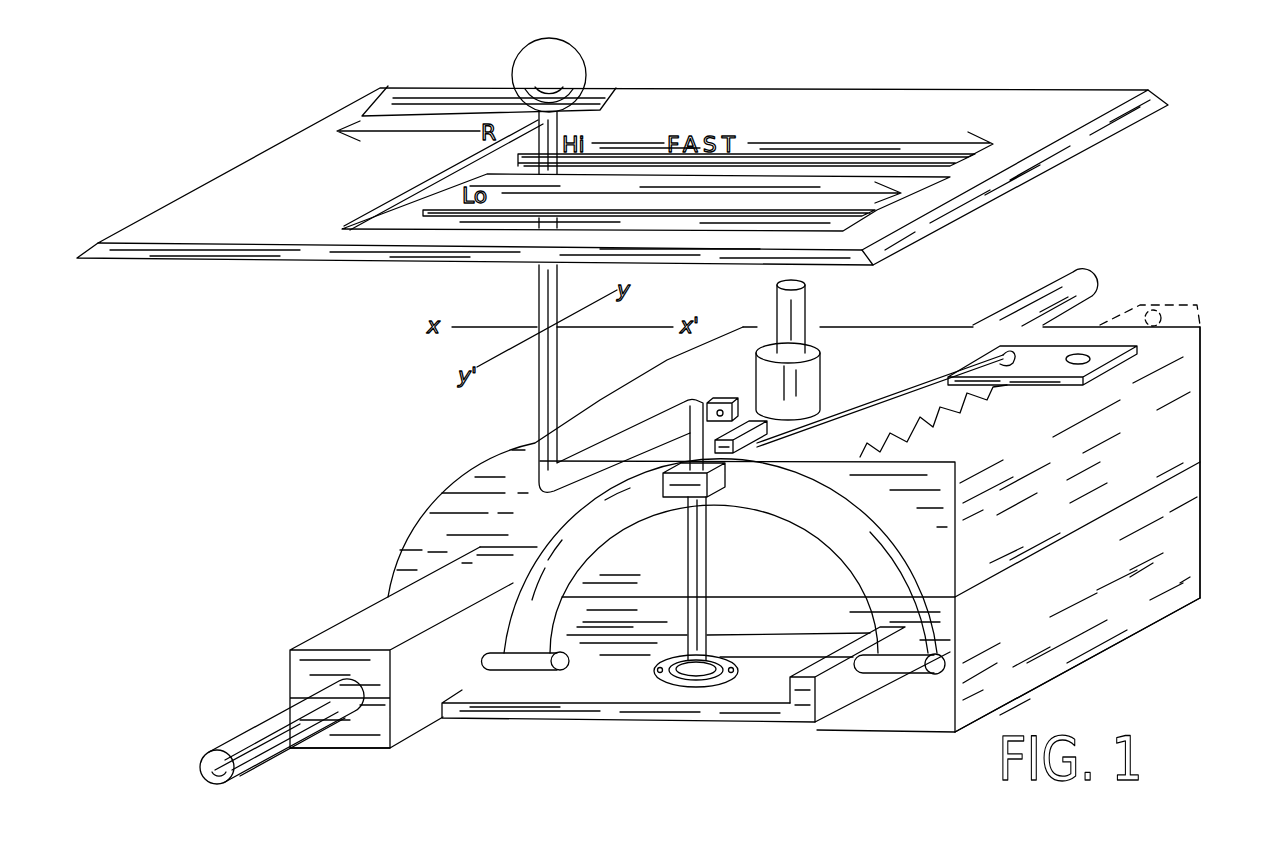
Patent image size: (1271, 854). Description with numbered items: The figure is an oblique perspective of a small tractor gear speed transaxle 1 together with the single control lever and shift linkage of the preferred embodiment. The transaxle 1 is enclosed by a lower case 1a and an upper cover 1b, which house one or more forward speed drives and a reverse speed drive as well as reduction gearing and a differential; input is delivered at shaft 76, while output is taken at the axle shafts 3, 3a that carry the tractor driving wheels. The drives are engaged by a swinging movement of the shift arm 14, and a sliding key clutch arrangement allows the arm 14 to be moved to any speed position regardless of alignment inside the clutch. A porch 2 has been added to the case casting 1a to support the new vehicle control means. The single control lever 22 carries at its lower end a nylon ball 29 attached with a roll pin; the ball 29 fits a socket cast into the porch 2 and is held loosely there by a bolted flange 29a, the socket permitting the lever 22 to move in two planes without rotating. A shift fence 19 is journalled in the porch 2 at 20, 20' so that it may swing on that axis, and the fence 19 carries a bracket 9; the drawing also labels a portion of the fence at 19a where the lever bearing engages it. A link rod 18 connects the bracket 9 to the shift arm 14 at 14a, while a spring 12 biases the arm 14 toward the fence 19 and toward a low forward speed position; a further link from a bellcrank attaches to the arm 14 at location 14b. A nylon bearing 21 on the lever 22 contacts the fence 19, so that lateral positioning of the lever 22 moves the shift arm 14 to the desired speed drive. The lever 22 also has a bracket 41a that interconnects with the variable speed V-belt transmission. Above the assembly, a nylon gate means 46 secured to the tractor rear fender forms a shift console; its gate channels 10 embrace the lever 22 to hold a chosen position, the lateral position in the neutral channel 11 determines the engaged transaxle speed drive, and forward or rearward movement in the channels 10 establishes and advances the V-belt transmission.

The transaxle 1 is at (1200, 466).
The lower case 1a is at (1196, 522).
The upper cover 1b is at (1196, 408).
The porch 2 is at (783, 700).
The axle shaft 3 is at (256, 731).
The axle shaft 3a is at (1085, 273).
The bracket 9 is at (771, 448).
The gate channels 10 is at (383, 104).
The neutral channel 11 is at (428, 193).
The spring 12 is at (921, 436).
The shift arm 14 is at (1047, 365).
The link rod connection point 14a is at (1013, 367).
The bellcrank link connection location 14b is at (1153, 312).
The link rod 18 is at (846, 410).
The shift fence 19 is at (805, 520).
The slide block 19a is at (712, 502).
The fence journal 20 is at (899, 711).
The fence journal 20' is at (526, 710).
The bearing 21 is at (702, 498).
The control lever 22 is at (537, 398).
The ball 29 is at (673, 687).
The bolted flange 29a is at (728, 676).
The bracket 41a is at (717, 410).
The gate means 46 is at (1108, 128).
The input shaft 76 is at (806, 290).